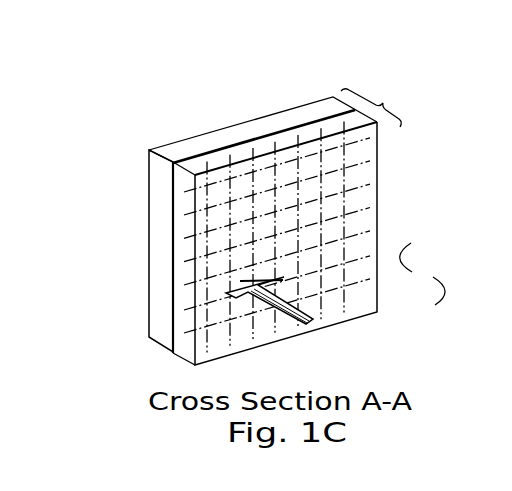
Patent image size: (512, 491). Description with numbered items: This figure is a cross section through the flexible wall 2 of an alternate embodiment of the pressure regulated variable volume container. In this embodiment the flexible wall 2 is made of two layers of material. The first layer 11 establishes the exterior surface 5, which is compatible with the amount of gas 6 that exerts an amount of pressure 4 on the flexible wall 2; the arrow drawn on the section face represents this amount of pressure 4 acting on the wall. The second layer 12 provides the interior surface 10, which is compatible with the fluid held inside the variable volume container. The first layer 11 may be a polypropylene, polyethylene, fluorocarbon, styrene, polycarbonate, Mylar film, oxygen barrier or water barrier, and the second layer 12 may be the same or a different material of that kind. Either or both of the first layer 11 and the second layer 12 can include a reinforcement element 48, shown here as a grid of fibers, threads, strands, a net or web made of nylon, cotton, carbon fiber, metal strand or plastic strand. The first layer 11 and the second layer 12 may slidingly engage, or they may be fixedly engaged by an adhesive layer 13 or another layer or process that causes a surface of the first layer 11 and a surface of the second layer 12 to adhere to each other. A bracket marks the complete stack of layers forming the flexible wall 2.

The interior surface 10 is at (272, 184).
The second layer 12 is at (260, 127).
The first layer 11 is at (284, 137).
The adhesive layer 13 is at (313, 125).
The flexible wall 2 is at (377, 104).
The exterior surface 5 is at (343, 221).
The amount of gas 6 is at (422, 274).
The reinforcement element 48 is at (322, 273).
The amount of pressure 4 is at (284, 315).